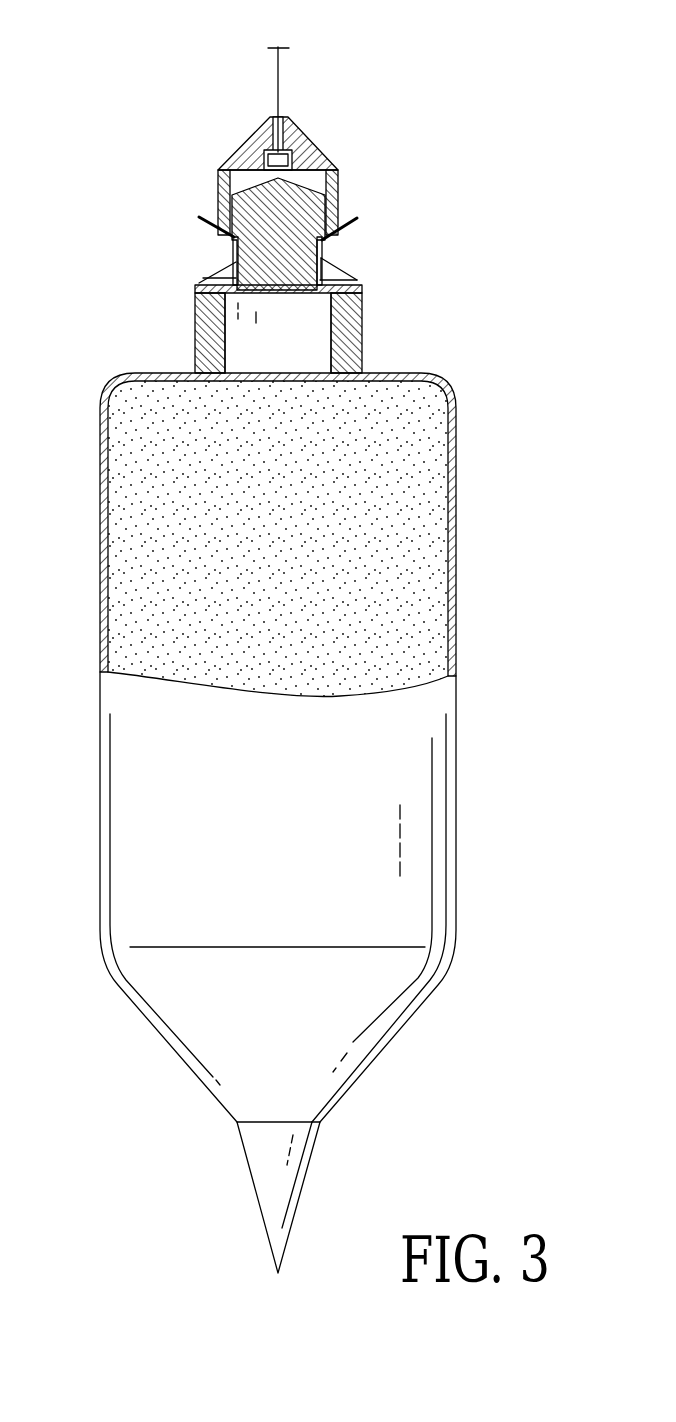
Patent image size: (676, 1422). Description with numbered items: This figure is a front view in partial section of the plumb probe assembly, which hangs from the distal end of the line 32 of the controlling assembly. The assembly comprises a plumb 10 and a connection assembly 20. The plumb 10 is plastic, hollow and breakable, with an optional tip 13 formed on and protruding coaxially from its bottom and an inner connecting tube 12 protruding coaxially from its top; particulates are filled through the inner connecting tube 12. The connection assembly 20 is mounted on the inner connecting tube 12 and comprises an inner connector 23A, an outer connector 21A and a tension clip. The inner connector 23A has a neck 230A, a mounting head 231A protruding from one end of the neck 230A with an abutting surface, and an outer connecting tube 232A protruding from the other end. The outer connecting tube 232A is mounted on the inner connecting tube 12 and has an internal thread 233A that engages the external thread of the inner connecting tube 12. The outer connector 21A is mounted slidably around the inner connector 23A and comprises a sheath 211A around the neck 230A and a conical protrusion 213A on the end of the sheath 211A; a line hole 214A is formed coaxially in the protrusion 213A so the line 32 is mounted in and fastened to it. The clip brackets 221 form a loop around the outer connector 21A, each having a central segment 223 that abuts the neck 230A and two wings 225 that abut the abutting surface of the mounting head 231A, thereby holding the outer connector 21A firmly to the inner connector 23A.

The plumb 10 is at (497, 405).
The inner connecting tube 12 is at (326, 347).
The tip 13 is at (296, 1156).
The connection assembly 20 is at (275, 222).
The outer connector 21A is at (219, 156).
The sheath 211A is at (230, 196).
The protrusion 213A is at (246, 153).
The line hole 214A is at (277, 115).
The clip bracket 221 is at (217, 256).
The central segment 223 is at (325, 255).
The wing 225 is at (357, 219).
The inner connector 23A is at (275, 334).
The neck 230A is at (195, 295).
The mounting head 231A is at (305, 210).
The outer connecting tube 232A is at (195, 335).
The internal thread 233A is at (363, 336).
The line 32 is at (277, 78).